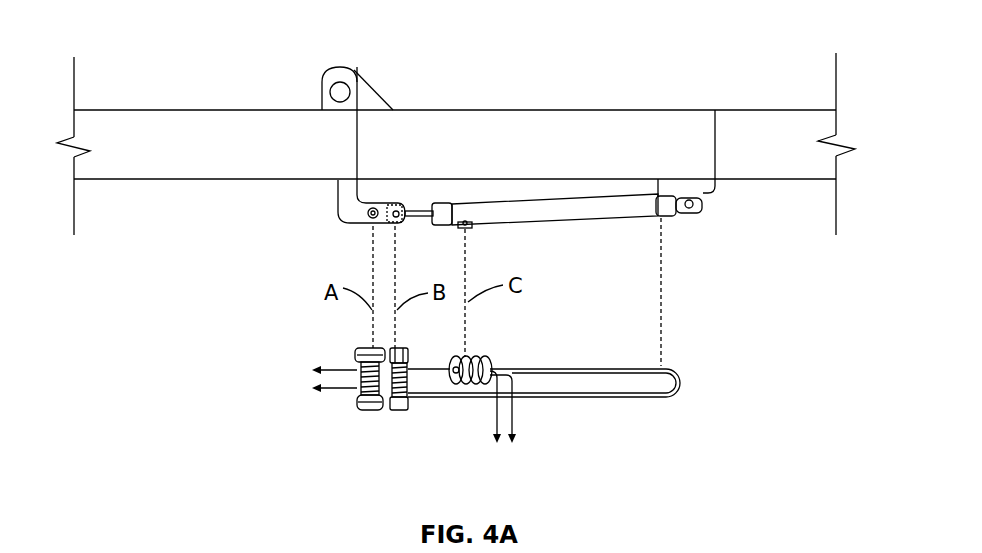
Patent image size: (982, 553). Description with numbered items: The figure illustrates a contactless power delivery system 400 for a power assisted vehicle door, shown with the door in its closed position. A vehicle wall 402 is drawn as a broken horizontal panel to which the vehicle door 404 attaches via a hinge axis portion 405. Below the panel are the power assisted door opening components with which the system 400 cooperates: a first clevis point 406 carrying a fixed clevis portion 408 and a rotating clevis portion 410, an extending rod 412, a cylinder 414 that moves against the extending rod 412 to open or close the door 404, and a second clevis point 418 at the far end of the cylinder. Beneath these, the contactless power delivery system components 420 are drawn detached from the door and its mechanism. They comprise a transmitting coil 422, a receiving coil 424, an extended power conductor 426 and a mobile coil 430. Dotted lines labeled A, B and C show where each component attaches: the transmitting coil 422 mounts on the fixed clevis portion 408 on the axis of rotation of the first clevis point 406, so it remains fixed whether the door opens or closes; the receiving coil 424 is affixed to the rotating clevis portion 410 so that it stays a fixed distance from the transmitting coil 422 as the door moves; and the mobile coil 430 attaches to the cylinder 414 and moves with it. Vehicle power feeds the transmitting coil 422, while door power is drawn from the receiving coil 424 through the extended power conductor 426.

The contactless power delivery system 400 is at (600, 80).
The vehicle wall 402 is at (283, 157).
The vehicle door 404 is at (605, 157).
The hinge axis portion 405 is at (322, 78).
The first clevis point 406 is at (342, 218).
The fixed clevis portion 408 is at (364, 228).
The rotating clevis portion 410 is at (407, 229).
The extending rod 412 is at (427, 203).
The cylinder 414 is at (522, 213).
The second clevis point 418 is at (703, 190).
The contactless power delivery system components 420 is at (716, 376).
The transmitting coil 422 is at (373, 411).
The receiving coil 424 is at (397, 411).
The extended power conductor 426 is at (565, 400).
The mobile coil 430 is at (488, 360).